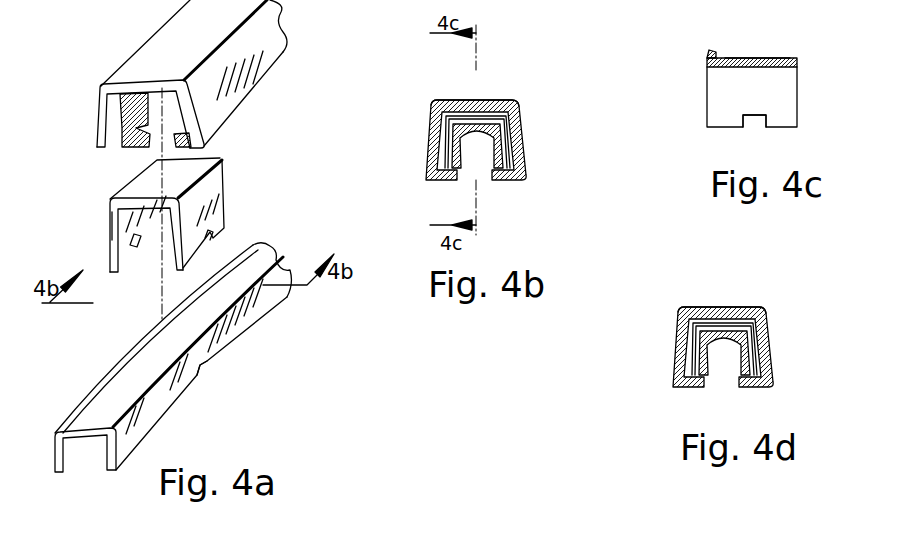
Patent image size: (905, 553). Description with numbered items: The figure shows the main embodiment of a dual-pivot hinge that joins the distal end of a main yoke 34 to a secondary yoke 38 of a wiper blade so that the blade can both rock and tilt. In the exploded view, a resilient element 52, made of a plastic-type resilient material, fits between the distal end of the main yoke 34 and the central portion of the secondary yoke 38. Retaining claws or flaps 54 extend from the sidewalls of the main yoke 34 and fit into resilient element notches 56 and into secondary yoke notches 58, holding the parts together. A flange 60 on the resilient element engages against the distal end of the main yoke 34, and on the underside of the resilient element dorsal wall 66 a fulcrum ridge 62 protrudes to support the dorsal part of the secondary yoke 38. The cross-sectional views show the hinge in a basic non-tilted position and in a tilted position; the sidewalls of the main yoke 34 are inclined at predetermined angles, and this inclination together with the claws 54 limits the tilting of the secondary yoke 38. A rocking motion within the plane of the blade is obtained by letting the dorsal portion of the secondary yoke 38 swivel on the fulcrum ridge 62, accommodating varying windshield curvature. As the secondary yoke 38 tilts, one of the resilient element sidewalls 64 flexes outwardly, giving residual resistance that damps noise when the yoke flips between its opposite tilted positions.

In FIG. 4a, the main yoke 34 is at (243, 63).
In FIG. 4b, the main yoke 34 is at (507, 100).
In FIG. 4d, the main yoke 34 is at (752, 306).
In FIG. 4a, the secondary yoke 38 is at (235, 323).
In FIG. 4b, the secondary yoke 38 is at (500, 150).
In FIG. 4d, the secondary yoke 38 is at (757, 365).
In FIG. 4a, the resilient element 52 is at (217, 165).
In FIG. 4b, the resilient element 52 is at (514, 127).
In FIG. 4d, the resilient element 52 is at (757, 332).
In FIG. 4a, the retaining claws 54 is at (176, 146).
In FIG. 4a, the resilient element notches 56 is at (183, 253).
In FIG. 4c, the resilient element notches 56 is at (750, 120).
In FIG. 4a, the secondary yoke notches 58 is at (202, 372).
In FIG. 4c, the flange 60 is at (712, 55).
In FIG. 4b, the fulcrum ridge 62 is at (438, 100).
In FIG. 4c, the fulcrum ridge 62 is at (744, 65).
In FIG. 4d, the fulcrum ridge 62 is at (682, 308).
In FIG. 4a, the resilient element sidewalls 64 is at (112, 238).
In FIG. 4c, the resilient element sidewalls 64 is at (718, 104).
In FIG. 4a, the dorsal wall 66 is at (153, 183).
In FIG. 4c, the dorsal wall 66 is at (740, 63).